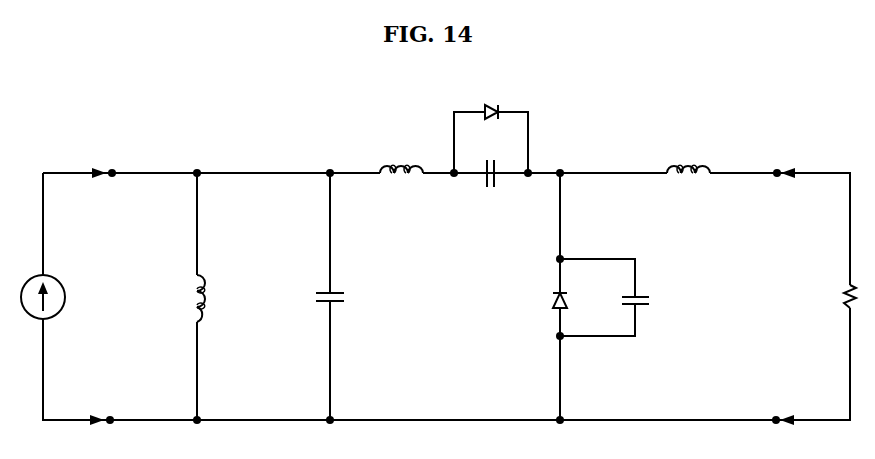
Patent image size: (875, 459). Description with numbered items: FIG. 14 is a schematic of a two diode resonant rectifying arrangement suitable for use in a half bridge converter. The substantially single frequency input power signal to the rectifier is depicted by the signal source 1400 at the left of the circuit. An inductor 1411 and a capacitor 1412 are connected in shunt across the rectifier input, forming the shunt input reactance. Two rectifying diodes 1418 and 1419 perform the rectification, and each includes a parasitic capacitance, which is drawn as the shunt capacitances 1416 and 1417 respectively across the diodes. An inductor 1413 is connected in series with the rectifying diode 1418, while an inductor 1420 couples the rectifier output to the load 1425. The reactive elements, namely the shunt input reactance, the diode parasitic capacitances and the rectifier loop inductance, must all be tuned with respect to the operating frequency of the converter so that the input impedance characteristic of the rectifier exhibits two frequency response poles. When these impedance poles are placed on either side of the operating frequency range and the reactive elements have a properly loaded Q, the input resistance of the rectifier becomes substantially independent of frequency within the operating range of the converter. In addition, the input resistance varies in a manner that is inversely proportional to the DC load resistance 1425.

The signal source 1400 is at (68, 297).
The inductor 1411 is at (229, 298).
The capacitor 1412 is at (357, 297).
The inductor 1413 is at (404, 156).
The shunt capacitance 1416 is at (496, 163).
The shunt capacitance 1417 is at (661, 299).
The rectifying diode 1418 is at (496, 100).
The rectifying diode 1419 is at (537, 299).
The inductor 1420 is at (689, 156).
The load 1425 is at (825, 296).